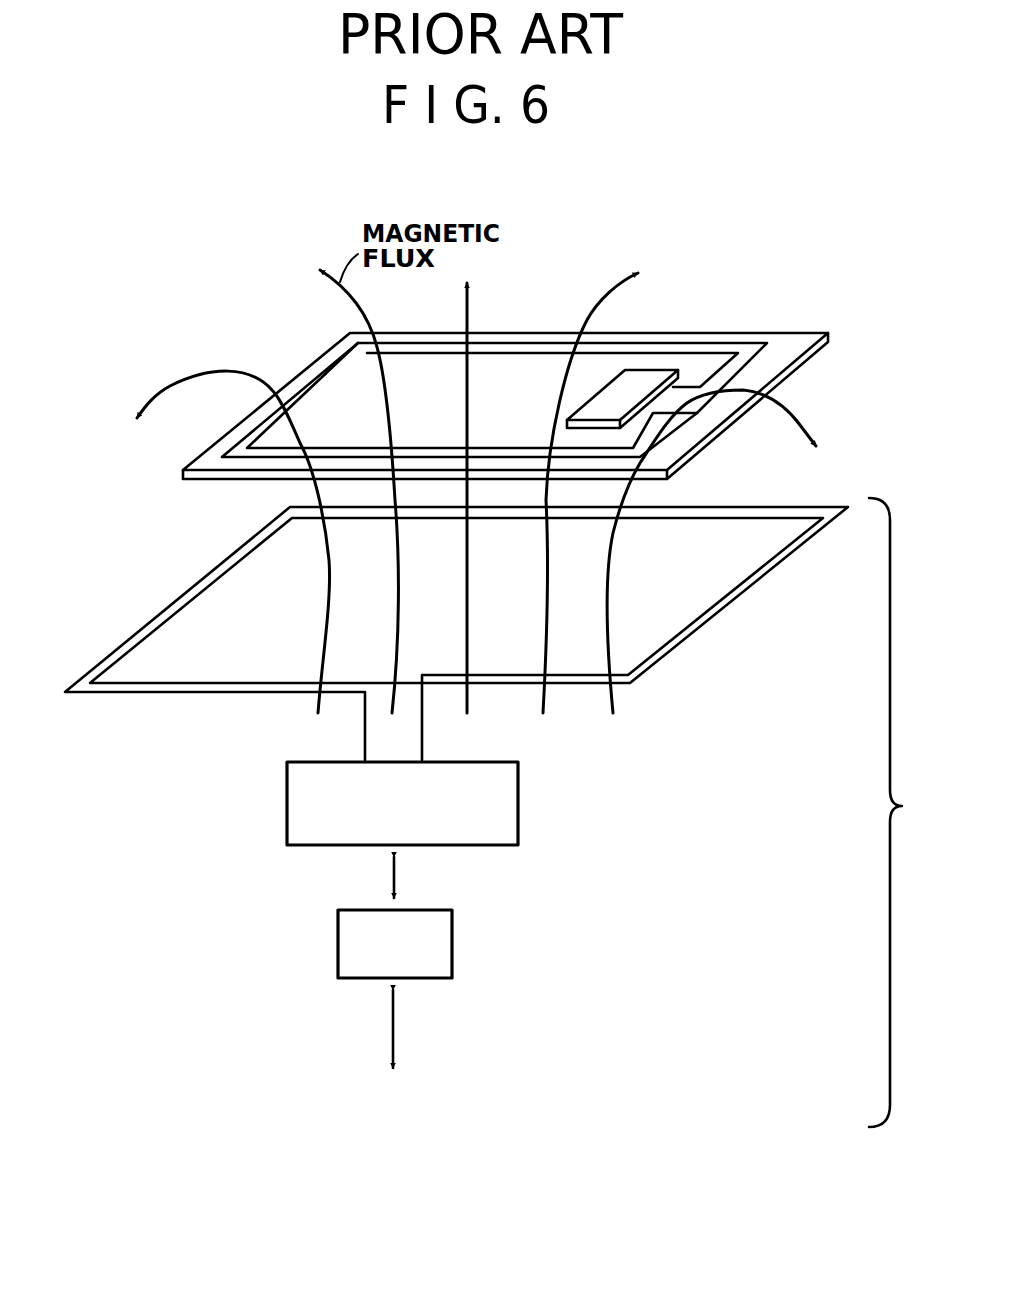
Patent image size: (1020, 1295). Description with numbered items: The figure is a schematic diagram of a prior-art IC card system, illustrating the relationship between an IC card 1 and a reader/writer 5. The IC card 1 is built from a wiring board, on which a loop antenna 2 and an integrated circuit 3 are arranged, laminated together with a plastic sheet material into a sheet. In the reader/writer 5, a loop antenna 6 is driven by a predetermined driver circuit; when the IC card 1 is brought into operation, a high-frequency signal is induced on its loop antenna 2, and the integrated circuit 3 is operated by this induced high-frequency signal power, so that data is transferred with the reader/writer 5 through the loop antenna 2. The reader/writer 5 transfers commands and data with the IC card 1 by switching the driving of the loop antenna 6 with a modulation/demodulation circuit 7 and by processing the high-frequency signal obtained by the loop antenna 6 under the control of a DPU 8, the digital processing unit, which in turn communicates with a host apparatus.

The IC card 1 is at (712, 236).
The loop antenna 2 is at (722, 342).
The integrated circuit 3 is at (637, 378).
The reader/writer 5 is at (493, 821).
The loop antenna 6 is at (750, 595).
The modulation/demodulation circuit 7 is at (518, 800).
The DPU 8 is at (452, 935).